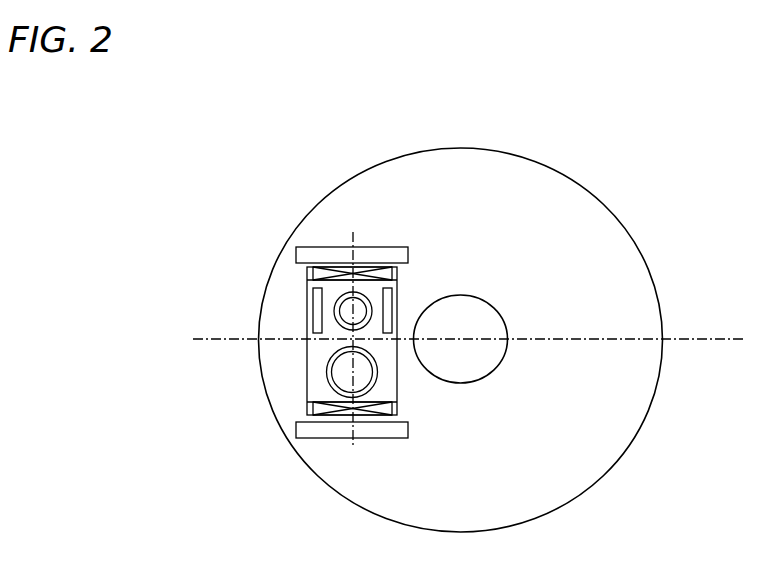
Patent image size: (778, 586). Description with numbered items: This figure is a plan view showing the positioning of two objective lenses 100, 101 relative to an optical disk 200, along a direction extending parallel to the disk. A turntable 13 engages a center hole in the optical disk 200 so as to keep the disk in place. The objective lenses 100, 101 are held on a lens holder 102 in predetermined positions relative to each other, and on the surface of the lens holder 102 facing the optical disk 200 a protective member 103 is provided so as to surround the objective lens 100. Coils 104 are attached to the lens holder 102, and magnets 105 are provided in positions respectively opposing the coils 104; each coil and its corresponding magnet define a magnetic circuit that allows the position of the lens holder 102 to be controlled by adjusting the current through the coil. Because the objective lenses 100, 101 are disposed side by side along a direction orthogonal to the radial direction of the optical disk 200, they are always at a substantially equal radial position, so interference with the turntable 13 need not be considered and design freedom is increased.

The optical disk 200 is at (590, 230).
The turntable 13 is at (460, 352).
The lens holder 102 is at (386, 353).
The coils 104 is at (312, 275).
The magnets 105 is at (337, 255).
The protective member 103 is at (387, 328).
The objective lens 100 is at (358, 313).
The objective lens 101 is at (360, 378).